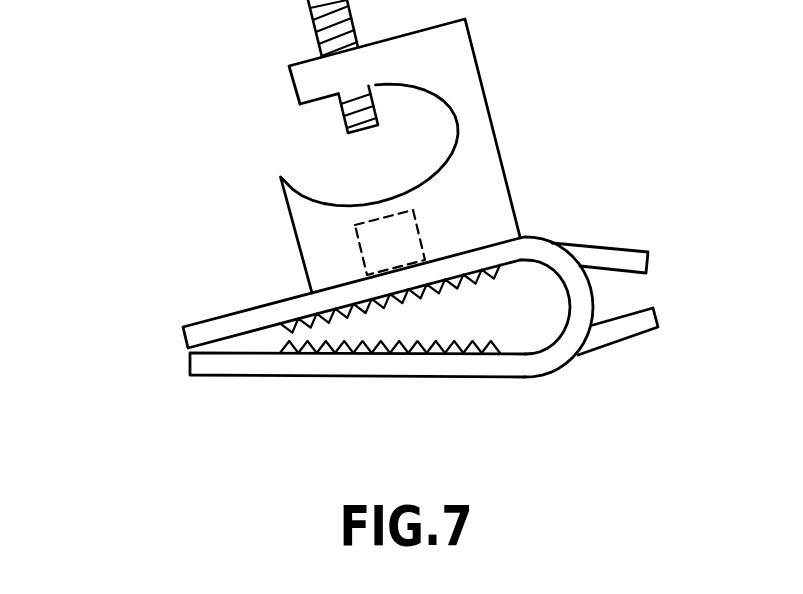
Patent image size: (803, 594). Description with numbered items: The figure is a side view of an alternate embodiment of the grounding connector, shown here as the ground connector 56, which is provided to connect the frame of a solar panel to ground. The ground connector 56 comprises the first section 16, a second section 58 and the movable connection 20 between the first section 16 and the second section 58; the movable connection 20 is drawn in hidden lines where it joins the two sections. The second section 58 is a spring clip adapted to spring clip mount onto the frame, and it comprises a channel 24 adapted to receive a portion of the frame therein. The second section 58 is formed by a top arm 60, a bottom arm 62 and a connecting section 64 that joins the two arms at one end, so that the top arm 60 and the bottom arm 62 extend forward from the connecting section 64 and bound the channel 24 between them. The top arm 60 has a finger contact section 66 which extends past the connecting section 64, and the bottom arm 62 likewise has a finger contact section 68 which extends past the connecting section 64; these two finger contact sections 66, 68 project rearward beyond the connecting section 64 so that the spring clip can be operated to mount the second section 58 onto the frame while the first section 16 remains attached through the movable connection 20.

The ground connector 56 is at (233, 106).
The first section 16 is at (475, 59).
The movable connection 20 is at (420, 235).
The top arm 60 is at (280, 300).
The second section 58 is at (365, 376).
The bottom arm 62 is at (317, 376).
The channel 24 is at (482, 312).
The connecting section 64 is at (593, 303).
The finger contact section 66 is at (614, 247).
The finger contact section 68 is at (628, 343).